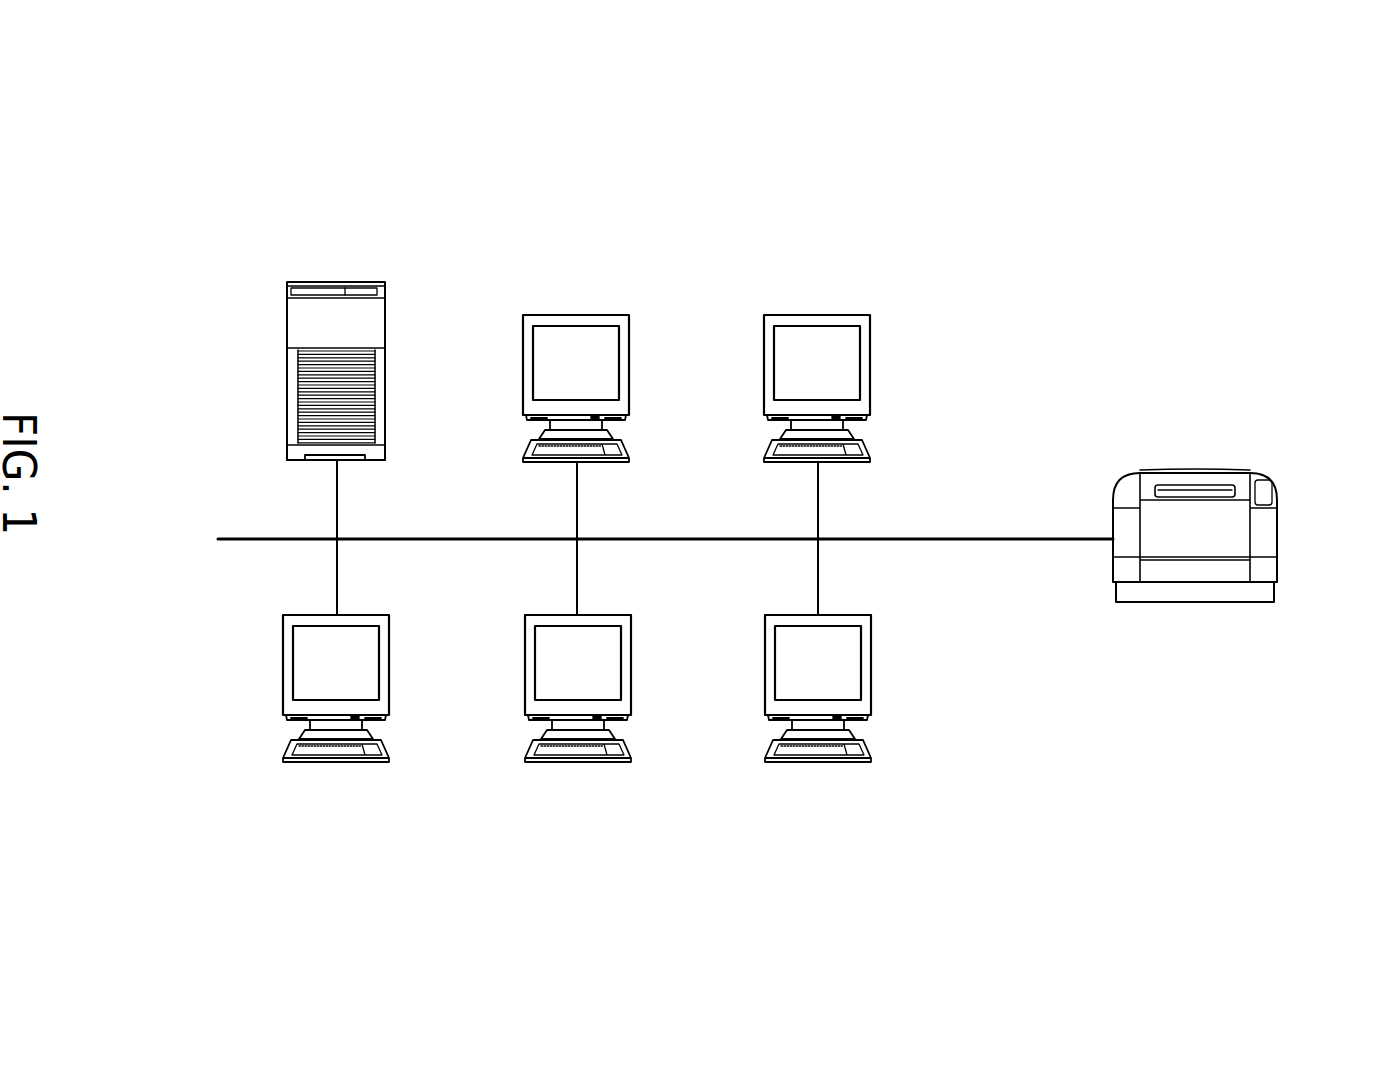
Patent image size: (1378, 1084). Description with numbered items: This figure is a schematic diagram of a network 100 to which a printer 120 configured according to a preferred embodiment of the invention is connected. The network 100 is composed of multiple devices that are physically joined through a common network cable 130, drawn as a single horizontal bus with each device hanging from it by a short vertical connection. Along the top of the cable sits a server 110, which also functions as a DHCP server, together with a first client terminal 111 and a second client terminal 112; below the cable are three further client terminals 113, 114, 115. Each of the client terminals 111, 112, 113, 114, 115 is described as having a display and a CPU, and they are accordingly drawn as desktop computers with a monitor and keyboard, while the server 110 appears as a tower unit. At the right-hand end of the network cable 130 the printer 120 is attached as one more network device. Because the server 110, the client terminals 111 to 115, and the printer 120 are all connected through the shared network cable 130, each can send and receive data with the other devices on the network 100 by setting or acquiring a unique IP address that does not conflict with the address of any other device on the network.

The network 100 is at (768, 250).
The server 110 is at (385, 307).
The client terminal 111 is at (628, 325).
The client terminal 112 is at (872, 325).
The client terminal 113 is at (310, 762).
The client terminal 114 is at (560, 760).
The client terminal 115 is at (802, 760).
The printer 120 is at (1277, 480).
The network cable 130 is at (247, 540).